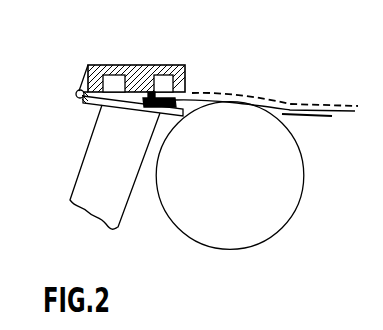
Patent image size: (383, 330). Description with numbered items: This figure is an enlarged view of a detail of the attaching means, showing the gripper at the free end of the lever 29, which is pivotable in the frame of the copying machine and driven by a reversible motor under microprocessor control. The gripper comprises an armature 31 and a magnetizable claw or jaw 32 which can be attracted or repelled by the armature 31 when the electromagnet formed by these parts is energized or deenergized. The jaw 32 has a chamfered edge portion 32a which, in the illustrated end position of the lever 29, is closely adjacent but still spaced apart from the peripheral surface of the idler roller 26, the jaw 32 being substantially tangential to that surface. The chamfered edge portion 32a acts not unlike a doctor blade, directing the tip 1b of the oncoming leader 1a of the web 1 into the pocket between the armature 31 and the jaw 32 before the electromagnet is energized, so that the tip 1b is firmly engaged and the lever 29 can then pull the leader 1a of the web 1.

The web 1 is at (340, 118).
The leader 1a is at (341, 110).
The tip 1b is at (157, 65).
The idler roller 26 is at (285, 192).
The lever 29 is at (120, 188).
The armature 31 is at (181, 67).
The claw or jaw 32 is at (145, 107).
The chamfered edge portion 32a is at (176, 113).